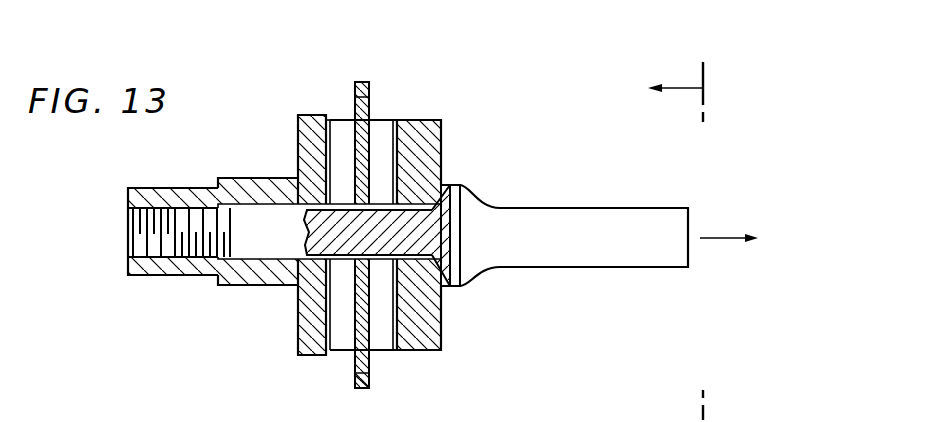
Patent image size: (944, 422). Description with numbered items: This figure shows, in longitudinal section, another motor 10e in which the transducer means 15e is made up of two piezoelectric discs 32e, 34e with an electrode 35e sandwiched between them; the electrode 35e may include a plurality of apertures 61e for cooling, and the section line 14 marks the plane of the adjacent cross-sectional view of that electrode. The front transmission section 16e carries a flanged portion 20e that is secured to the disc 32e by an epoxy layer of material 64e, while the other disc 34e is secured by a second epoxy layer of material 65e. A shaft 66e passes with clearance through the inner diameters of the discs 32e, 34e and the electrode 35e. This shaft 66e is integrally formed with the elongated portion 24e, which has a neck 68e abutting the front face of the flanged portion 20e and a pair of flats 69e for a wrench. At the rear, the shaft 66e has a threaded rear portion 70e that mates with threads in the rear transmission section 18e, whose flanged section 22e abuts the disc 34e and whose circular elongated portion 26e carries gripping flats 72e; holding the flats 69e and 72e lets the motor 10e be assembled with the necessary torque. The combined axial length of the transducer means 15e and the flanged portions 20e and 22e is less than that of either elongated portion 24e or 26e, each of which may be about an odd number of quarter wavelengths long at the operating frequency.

The motor 10e is at (509, 178).
The section line 14- 14 is at (674, 239).
The transducer means 15e is at (380, 113).
The transmission section 16e is at (440, 150).
The rear transmission section 18e is at (247, 178).
The flanged portion 20e is at (432, 332).
The flanged section 22e is at (305, 352).
The elongated portion 24e is at (598, 209).
The circular elongated portion 26e is at (235, 286).
The piezoelectric disc 32e is at (383, 345).
The piezoelectric disc 34e is at (345, 347).
The electrode 35e is at (365, 83).
The apertures 61e is at (364, 393).
The epoxy layer of material 64e is at (397, 349).
The epoxy layer of material 65e is at (330, 117).
The shaft 66e is at (285, 244).
The neck 68e is at (453, 186).
The flats 69e is at (455, 255).
The threaded rear portion 70e is at (180, 227).
The flats 72e is at (173, 188).